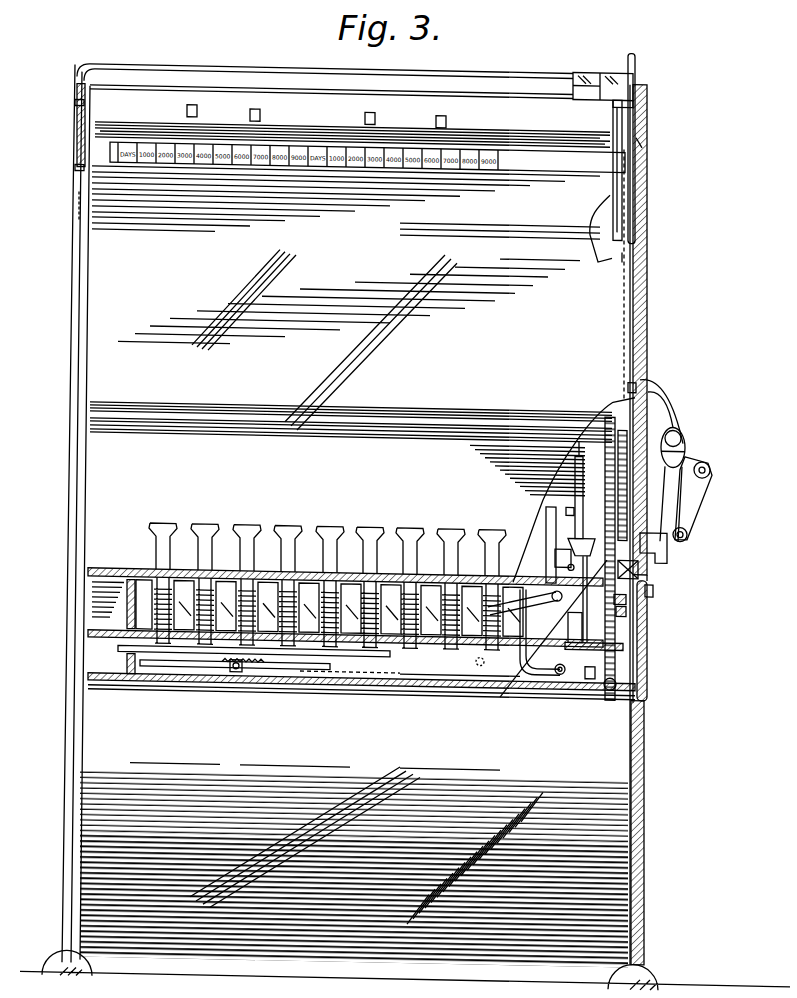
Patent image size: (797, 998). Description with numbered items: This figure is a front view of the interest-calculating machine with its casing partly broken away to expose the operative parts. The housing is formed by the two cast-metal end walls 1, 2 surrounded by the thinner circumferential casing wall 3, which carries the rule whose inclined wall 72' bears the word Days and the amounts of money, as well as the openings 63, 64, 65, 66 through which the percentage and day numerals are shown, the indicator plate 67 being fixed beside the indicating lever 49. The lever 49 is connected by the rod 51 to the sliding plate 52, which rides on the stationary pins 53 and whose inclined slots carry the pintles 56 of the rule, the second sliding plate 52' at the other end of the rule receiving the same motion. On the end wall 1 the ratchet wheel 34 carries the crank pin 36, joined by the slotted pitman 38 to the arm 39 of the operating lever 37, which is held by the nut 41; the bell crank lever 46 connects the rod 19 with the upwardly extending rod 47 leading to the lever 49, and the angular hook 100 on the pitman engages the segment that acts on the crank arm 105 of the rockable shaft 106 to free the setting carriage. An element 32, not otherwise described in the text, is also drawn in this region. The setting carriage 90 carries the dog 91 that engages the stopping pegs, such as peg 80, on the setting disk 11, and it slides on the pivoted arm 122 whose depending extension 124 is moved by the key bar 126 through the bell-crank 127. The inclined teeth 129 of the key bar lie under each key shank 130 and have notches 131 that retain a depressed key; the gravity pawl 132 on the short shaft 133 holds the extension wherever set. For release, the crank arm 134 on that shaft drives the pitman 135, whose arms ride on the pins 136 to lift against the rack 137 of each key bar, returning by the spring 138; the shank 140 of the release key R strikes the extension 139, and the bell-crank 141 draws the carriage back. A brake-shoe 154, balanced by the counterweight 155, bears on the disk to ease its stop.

The end wall 1 is at (648, 95).
The end wall 2 is at (78, 100).
The casing wall 3 is at (485, 65).
The setting disk 11 is at (578, 481).
The rod 19 is at (688, 521).
The pinion 32 is at (613, 655).
The ratchet wheel 34 is at (628, 622).
The crank pin 36 is at (630, 457).
The operating lever 37 is at (660, 532).
The slotted pitman 38 is at (650, 408).
The arm of operating lever 39 is at (662, 392).
The nut 41 is at (650, 547).
The bell crank lever 46 is at (705, 464).
The upwardly extending rod 47 is at (642, 249).
The indicating lever 49 is at (637, 47).
The rod 51 is at (622, 193).
The sliding plate 52 is at (648, 134).
The second sliding plate 52' is at (57, 125).
The stationary pins 53 is at (88, 148).
The pins or pintles 56 is at (76, 103).
The opening 63 is at (185, 106).
The opening 64 is at (363, 112).
The opening 65 is at (447, 115).
The opening 66 is at (262, 112).
The indicator plate 67 is at (592, 58).
The inclined wall of rule 72' is at (346, 196).
The stopping peg 80 is at (553, 509).
The setting carriage 90 is at (570, 539).
The dog 91 is at (588, 528).
The angular hook 100 is at (648, 367).
The crank arm 105 is at (620, 601).
The rockable shaft 106 is at (647, 567).
The pivoted arm 122 is at (567, 524).
The depending extension 124 is at (557, 679).
The key bar 126 is at (307, 651).
The bell-crank 127 is at (467, 551).
The inclined teeth 129 is at (382, 552).
The key shank 130 is at (157, 592).
The notches 131 is at (387, 609).
The gravity pawl 132 is at (640, 707).
The short shaft 133 is at (558, 684).
The crank arm 134 is at (596, 683).
The pitman 135 is at (470, 681).
The pins 136 is at (235, 657).
The rack 137 is at (258, 652).
The spring 138 is at (332, 681).
The extension 139 is at (603, 683).
The shank of release key 140 is at (647, 680).
The bell-crank 141 is at (587, 615).
The brake-shoe 154 is at (575, 490).
The counterweight 155 is at (650, 577).
The release key R is at (635, 559).